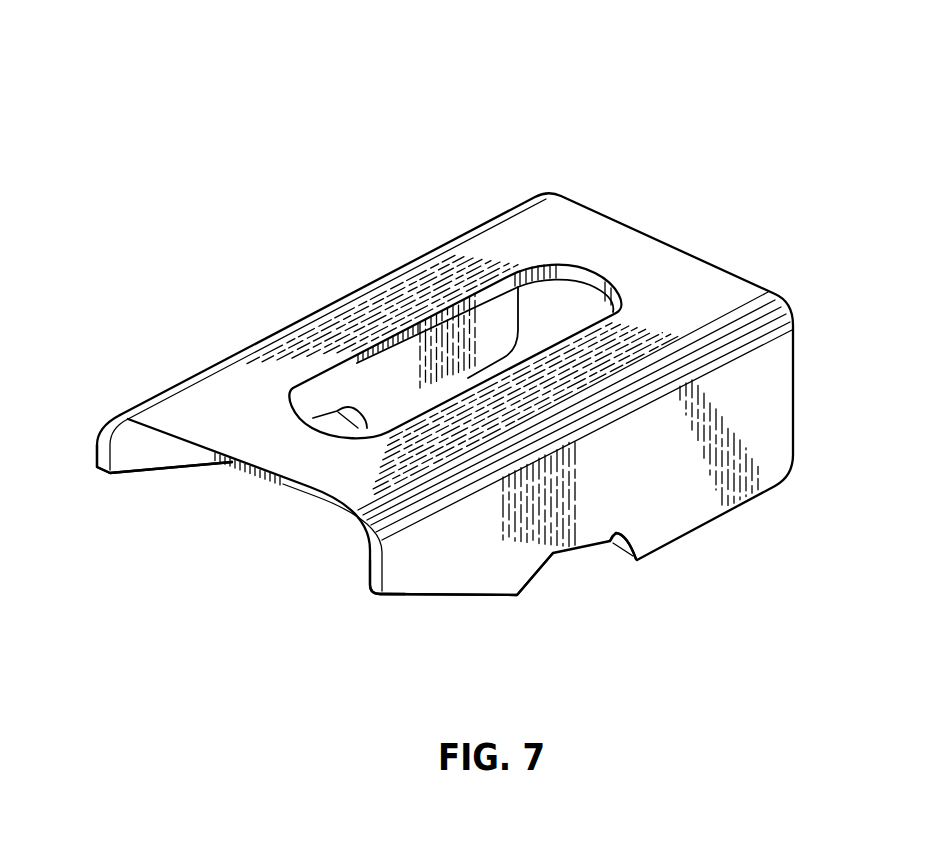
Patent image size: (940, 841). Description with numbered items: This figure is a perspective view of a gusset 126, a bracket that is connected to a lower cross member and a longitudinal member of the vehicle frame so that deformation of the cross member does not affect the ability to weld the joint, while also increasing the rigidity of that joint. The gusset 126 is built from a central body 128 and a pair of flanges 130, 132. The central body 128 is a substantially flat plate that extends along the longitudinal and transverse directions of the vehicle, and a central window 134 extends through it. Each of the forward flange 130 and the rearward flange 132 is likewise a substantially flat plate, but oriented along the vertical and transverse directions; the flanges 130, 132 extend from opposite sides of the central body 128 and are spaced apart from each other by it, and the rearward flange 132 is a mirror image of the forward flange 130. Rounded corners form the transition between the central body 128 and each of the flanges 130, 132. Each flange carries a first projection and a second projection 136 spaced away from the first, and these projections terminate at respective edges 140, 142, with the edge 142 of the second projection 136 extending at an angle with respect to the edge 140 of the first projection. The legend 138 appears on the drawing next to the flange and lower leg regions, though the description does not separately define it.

The gusset 126 is at (210, 137).
The central body 128 is at (625, 250).
The forward flange 130 is at (750, 403).
The rearward flange 132 is at (155, 470).
The central window 134 is at (412, 373).
The second projection 136 is at (737, 470).
The leg 138 is at (462, 567).
The edge of first projection 140 is at (673, 543).
The edge of second projection 142 is at (405, 595).